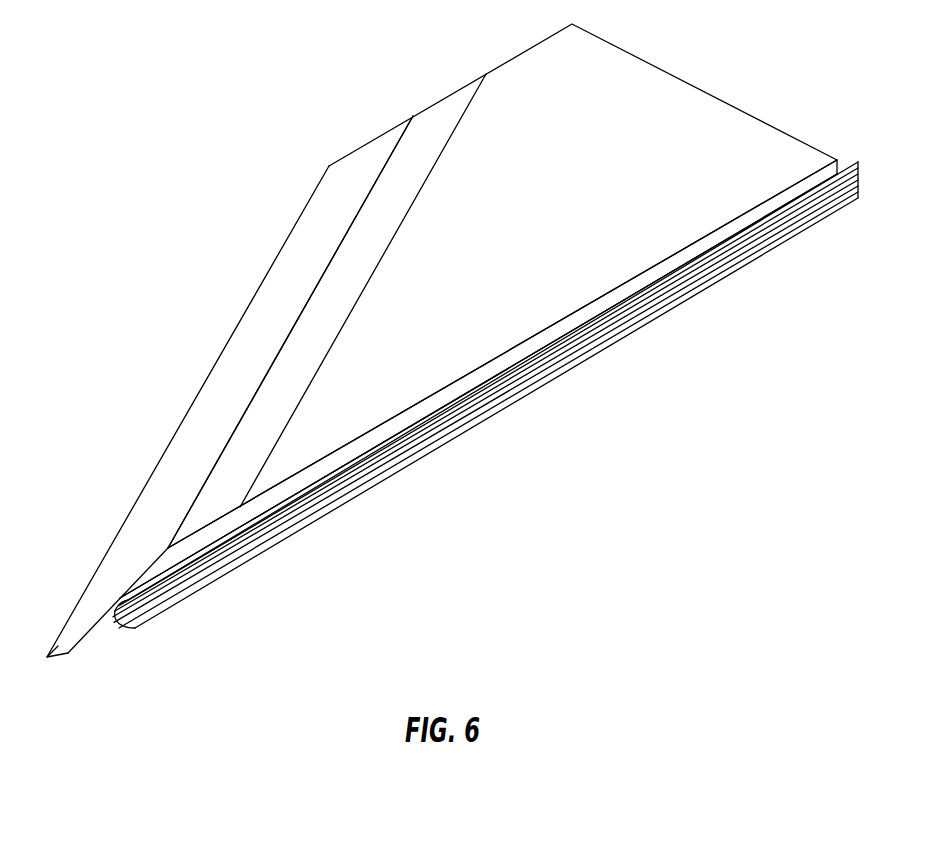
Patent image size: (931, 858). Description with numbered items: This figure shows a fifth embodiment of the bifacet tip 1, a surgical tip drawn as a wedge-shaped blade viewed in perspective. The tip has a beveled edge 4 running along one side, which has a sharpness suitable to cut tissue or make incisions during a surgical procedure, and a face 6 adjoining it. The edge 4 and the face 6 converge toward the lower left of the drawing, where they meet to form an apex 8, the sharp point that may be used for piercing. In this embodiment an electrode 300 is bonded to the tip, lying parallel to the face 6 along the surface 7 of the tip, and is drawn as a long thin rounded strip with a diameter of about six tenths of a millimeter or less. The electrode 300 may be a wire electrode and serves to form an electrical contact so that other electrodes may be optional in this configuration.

The bifacet tip 1 is at (438, 360).
The beveled edge 4 is at (185, 418).
The face 6 is at (107, 627).
The surface 7 is at (664, 241).
The apex 8 is at (55, 662).
The electrode 300 is at (355, 490).